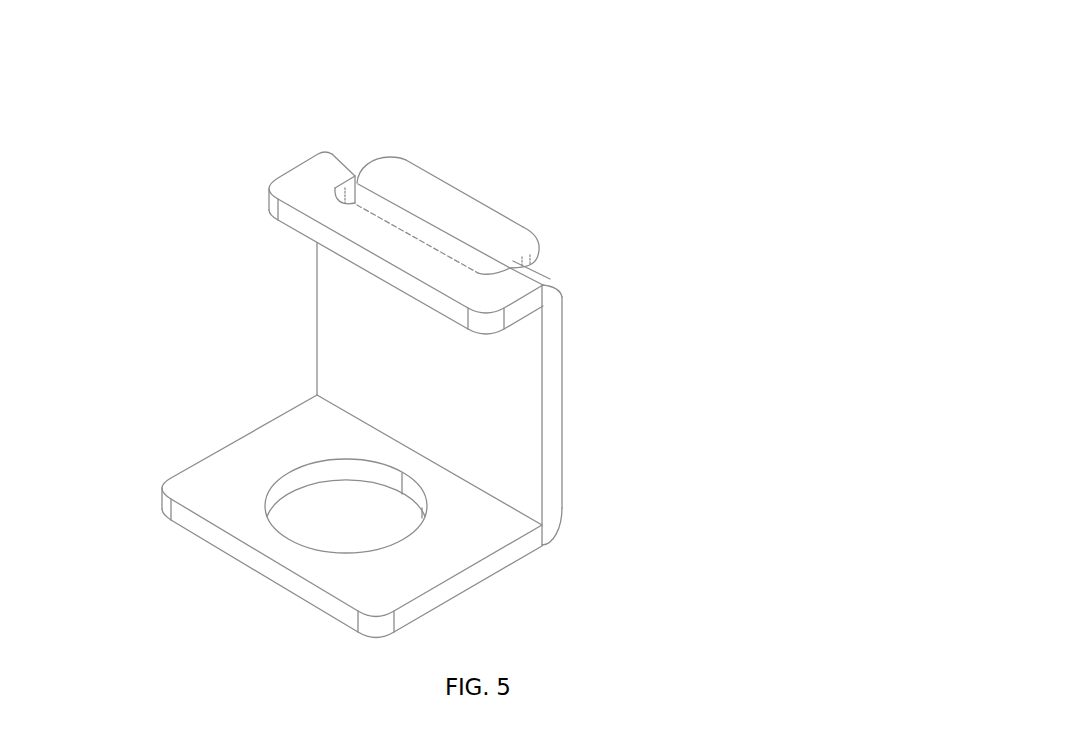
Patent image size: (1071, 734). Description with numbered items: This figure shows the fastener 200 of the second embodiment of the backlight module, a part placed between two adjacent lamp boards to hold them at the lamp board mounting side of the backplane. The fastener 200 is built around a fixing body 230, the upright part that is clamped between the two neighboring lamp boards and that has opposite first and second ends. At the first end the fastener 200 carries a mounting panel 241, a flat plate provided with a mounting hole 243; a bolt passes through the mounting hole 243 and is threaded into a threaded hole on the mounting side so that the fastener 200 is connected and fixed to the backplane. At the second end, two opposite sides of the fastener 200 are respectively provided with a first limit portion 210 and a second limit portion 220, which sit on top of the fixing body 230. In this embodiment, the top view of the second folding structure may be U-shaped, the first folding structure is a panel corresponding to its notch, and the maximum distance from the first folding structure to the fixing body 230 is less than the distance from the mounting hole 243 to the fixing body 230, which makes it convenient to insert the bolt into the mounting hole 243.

The fastener 200 is at (487, 323).
The first limit portion 210 is at (495, 307).
The second limit portion 220 is at (457, 202).
The fixing body 230 is at (532, 403).
The mounting panel 241 is at (502, 447).
The mounting hole 243 is at (320, 505).